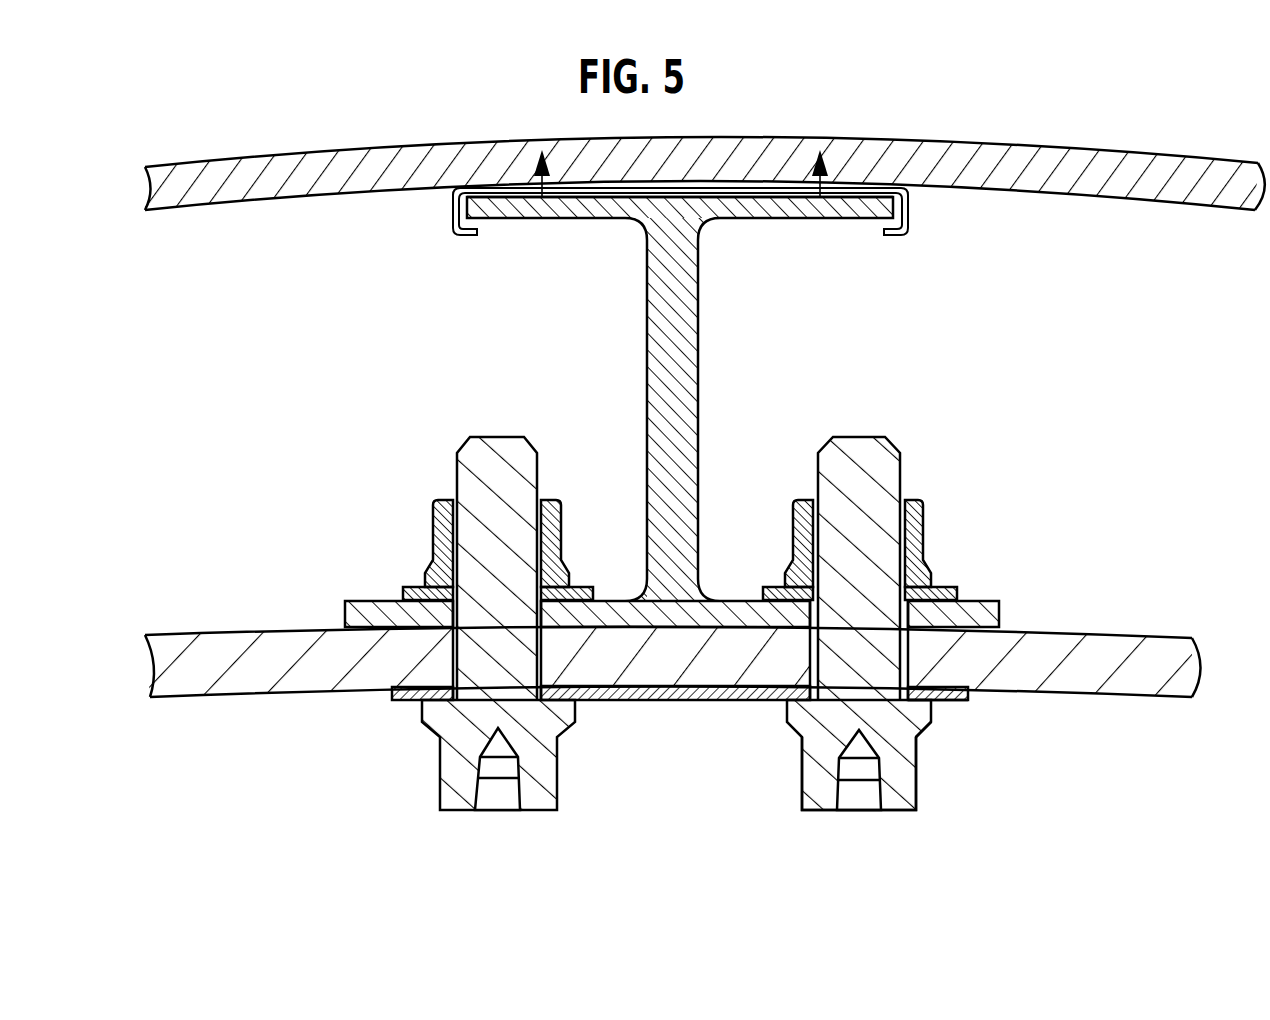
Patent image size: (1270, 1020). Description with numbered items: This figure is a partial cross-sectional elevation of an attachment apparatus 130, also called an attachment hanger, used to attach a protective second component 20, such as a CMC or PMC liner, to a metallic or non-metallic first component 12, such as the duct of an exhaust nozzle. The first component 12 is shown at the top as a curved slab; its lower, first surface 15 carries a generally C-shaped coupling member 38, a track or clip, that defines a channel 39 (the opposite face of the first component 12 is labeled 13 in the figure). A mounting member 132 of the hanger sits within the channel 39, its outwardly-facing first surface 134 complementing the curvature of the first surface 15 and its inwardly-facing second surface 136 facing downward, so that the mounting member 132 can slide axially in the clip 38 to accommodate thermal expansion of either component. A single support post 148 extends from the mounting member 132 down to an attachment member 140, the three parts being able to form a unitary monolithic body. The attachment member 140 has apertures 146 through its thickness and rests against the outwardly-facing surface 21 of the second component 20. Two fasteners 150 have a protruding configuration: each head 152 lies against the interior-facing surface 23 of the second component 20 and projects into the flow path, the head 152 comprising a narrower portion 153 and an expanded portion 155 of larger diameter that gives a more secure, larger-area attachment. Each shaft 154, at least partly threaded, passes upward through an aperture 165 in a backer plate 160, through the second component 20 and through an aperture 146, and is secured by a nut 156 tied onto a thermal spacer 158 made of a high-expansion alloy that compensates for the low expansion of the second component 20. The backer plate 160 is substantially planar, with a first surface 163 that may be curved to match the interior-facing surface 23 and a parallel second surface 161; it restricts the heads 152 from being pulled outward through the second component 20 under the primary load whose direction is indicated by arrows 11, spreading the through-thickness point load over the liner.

The arrows 11 is at (536, 178).
The first component 12 is at (1078, 170).
The outer surface of skin 13 is at (985, 143).
The first surface 15 is at (1013, 193).
The second component 20 is at (1138, 643).
The outwardly-facing surface 21 is at (243, 630).
The interior-facing surface 23 is at (277, 692).
The coupling member 38 is at (452, 212).
The channel 39 is at (466, 236).
The attachment apparatus 130 is at (352, 367).
The mounting member 132 is at (773, 242).
The first surface 134 is at (486, 195).
The second surface 136 is at (576, 219).
The attachment member 140 is at (1020, 602).
The apertures 146 is at (571, 595).
The support post 148 is at (722, 392).
The fasteners 150 is at (497, 412).
The head 152 is at (548, 792).
The narrower portion 153 is at (922, 781).
The shaft 154 is at (473, 452).
The expanded portion 155 is at (924, 724).
The nuts 156 is at (433, 513).
The thermal spacers 158 is at (406, 592).
The backer plate 160 is at (998, 694).
The second surface 161 is at (697, 679).
The first surface 163 is at (735, 701).
The aperture 165 is at (441, 724).